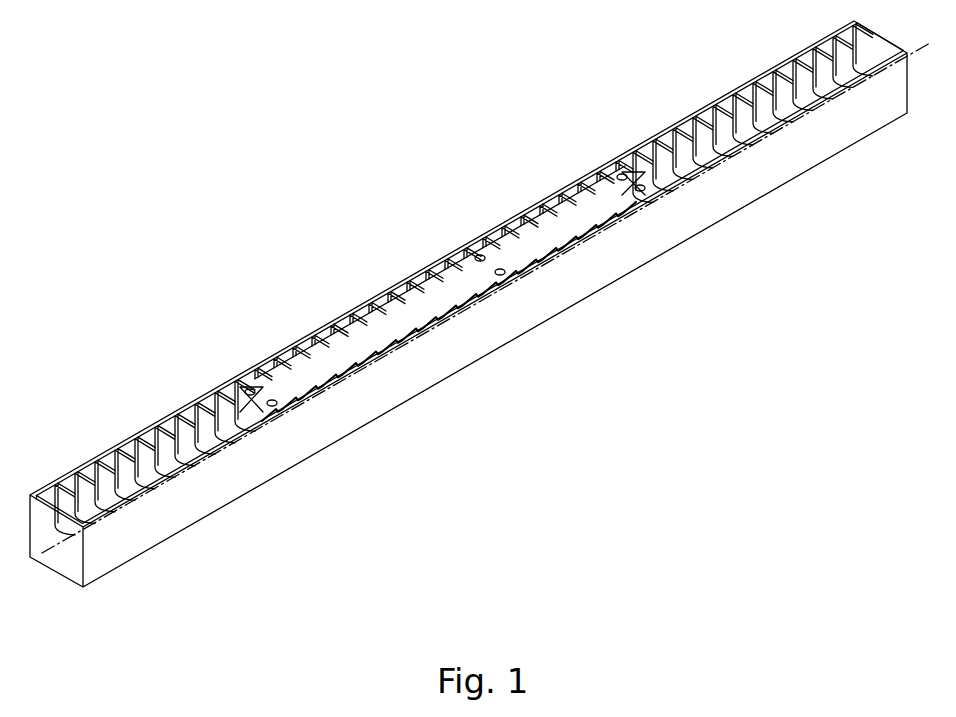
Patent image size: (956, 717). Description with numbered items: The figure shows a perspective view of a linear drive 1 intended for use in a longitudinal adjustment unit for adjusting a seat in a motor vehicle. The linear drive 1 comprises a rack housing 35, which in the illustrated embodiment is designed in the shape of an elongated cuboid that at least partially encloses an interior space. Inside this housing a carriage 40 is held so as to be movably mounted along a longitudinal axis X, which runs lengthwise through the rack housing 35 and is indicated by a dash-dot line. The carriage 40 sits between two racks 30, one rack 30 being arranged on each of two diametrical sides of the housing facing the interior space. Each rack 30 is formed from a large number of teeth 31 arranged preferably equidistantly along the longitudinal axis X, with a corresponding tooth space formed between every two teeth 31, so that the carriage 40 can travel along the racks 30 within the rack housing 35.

The linear drive 1 is at (480, 304).
The rack 30 is at (660, 165).
The teeth 31 is at (195, 415).
The rack housing 35 is at (410, 375).
The carriage 40 is at (452, 296).
The longitudinal axis X is at (570, 255).